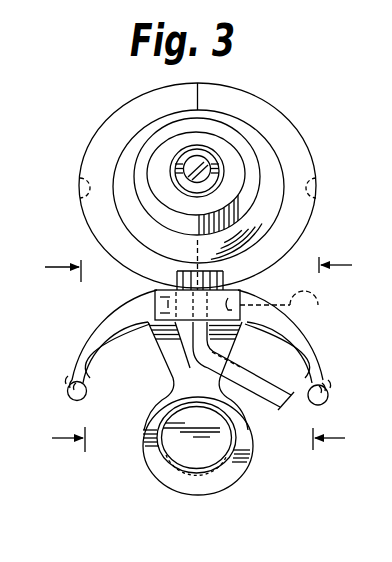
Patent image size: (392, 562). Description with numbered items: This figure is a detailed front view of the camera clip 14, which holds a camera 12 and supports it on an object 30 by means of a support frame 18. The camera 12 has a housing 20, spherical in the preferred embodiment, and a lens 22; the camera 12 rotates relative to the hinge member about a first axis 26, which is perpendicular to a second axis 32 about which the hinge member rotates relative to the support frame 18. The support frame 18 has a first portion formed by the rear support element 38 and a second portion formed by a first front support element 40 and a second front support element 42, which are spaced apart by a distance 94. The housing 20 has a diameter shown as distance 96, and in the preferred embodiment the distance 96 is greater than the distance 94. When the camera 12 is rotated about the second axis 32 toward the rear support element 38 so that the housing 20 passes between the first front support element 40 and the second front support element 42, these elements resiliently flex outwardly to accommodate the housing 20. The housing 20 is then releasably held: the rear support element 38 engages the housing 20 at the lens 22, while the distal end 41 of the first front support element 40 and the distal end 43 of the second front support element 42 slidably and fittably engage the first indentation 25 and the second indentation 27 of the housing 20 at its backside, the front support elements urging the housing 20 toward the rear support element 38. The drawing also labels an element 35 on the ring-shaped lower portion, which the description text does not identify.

The camera 12 is at (74, 152).
The housing 20 is at (100, 128).
The lens 22 is at (213, 160).
The first indentation 25 is at (78, 190).
The second indentation 27 is at (318, 188).
The first axis 26 is at (195, 251).
The second axis 32 is at (252, 303).
The camera clip 14 is at (82, 332).
The support frame 18 is at (317, 339).
The first front support element 40 is at (64, 383).
The distal end of first front support element 41 is at (82, 400).
The second front support element 42 is at (337, 393).
The distal end of second front support element 43 is at (325, 404).
The rear support element 38 is at (149, 481).
The object 30 is at (220, 480).
The ring bore 35 is at (190, 458).
The distance 96 is at (62, 270).
The distance 94 is at (60, 441).